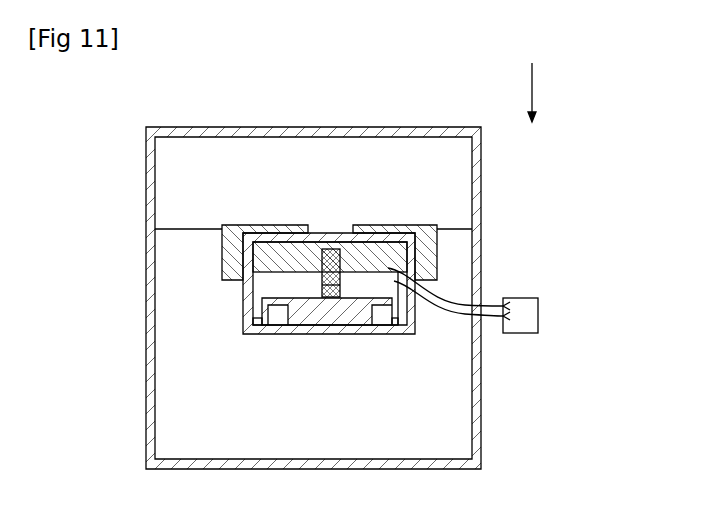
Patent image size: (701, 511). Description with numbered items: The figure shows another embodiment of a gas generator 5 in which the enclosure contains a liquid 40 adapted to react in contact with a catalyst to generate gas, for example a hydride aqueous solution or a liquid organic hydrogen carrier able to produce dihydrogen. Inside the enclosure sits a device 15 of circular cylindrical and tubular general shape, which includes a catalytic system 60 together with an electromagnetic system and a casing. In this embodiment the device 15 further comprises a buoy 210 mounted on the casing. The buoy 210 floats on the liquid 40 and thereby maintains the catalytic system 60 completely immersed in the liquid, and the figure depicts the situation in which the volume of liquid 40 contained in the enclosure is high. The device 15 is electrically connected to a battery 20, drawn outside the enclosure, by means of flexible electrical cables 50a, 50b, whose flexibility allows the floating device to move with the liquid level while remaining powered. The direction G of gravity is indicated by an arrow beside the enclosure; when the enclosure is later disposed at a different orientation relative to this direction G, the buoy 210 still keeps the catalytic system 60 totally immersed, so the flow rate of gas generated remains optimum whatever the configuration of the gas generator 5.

The gas generator 5 is at (337, 128).
The liquid 40 is at (170, 388).
The buoy 210 is at (398, 225).
The catalytic system 60 is at (277, 337).
The device 15 is at (388, 337).
The flexible electrical cable 50a is at (450, 300).
The flexible electrical cable 50b is at (455, 320).
The battery 20 is at (536, 320).
The direction of gravity G is at (532, 85).